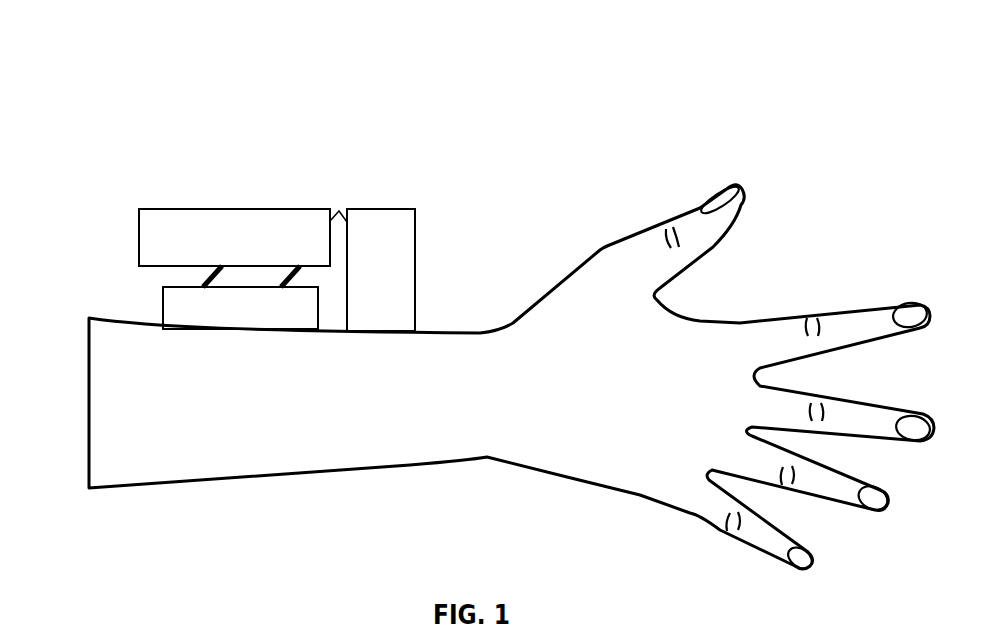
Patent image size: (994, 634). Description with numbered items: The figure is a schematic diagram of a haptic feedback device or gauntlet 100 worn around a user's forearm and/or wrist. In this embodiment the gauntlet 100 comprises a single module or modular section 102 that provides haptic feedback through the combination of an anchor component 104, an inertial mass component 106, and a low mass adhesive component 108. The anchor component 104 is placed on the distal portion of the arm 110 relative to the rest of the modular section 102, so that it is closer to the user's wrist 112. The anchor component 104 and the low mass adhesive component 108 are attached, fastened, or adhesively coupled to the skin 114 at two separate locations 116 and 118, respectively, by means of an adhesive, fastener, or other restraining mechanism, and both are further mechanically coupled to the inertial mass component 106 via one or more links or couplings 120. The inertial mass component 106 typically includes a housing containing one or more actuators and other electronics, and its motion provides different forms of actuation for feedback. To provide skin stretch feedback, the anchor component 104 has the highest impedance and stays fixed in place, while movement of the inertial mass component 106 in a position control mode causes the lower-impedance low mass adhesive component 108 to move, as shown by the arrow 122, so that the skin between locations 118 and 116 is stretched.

The haptic feedback device or gauntlet 100 is at (508, 97).
The modular section 102 is at (268, 180).
The anchor component 104 is at (381, 270).
The inertial mass component 106 is at (244, 249).
The low mass adhesive component 108 is at (250, 321).
The arm 110 is at (294, 421).
The wrist 112 is at (502, 392).
The skin 114 is at (138, 320).
The location 116 is at (387, 330).
The location 118 is at (217, 328).
The links or couplings 120 is at (295, 276).
The arrow 122 is at (317, 350).